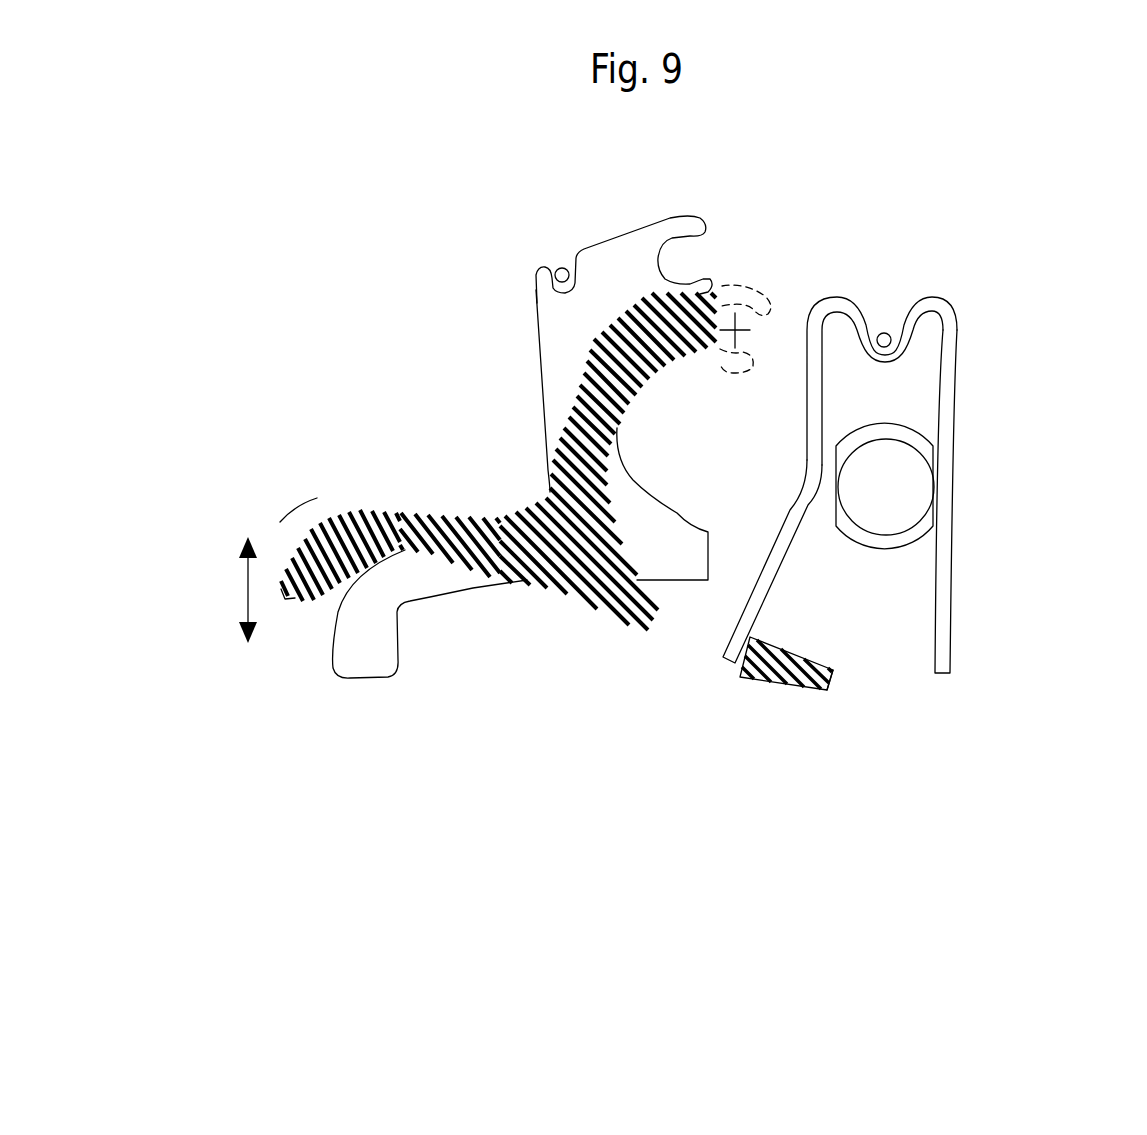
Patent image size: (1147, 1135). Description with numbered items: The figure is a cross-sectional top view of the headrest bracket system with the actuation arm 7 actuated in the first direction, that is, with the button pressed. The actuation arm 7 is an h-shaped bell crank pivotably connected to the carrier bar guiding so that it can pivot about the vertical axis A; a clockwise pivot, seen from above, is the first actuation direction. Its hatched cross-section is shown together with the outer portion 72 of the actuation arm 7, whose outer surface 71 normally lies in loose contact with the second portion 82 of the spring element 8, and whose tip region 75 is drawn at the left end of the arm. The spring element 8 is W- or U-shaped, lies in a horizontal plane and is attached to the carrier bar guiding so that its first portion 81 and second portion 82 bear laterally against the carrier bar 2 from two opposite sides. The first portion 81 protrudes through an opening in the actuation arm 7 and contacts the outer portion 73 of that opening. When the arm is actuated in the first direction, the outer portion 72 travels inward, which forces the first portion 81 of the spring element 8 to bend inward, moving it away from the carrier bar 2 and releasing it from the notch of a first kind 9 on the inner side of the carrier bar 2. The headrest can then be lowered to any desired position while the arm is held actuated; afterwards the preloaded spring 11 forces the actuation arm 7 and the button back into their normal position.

The preloaded spring 11 is at (618, 301).
The actuation arm 7 is at (530, 590).
The arm tip 75 is at (290, 563).
The vertical axis A is at (740, 323).
The spring element 8 is at (764, 546).
The first portion of the spring element 81 is at (753, 603).
The second portion of the spring element 82 is at (940, 598).
The first carrier bar 2 is at (890, 546).
The notch of a first kind 9 is at (832, 493).
The outer portion of the opening 73 is at (735, 662).
The outer portion of the actuation arm 72 is at (773, 683).
The outer surface of the outer portion 71 is at (833, 692).